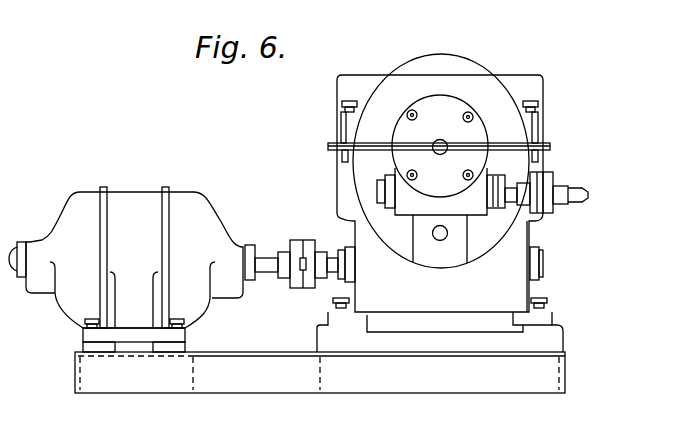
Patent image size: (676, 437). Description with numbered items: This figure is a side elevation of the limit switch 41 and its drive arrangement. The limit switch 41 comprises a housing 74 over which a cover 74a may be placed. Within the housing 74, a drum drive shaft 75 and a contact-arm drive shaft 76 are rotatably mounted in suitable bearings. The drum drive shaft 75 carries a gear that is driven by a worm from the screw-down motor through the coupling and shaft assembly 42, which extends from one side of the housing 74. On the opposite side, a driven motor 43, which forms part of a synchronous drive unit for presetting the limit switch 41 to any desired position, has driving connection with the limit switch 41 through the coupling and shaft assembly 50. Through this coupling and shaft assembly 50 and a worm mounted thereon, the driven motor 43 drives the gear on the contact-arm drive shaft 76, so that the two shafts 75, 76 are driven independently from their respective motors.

The limit switch 41 is at (497, 54).
The coupling and shaft assembly 42 is at (553, 177).
The driven motor 43 is at (208, 183).
The coupling and shaft assembly 50 is at (308, 241).
The housing 74 is at (531, 231).
The cover 74a is at (490, 70).
The drum drive shaft 75 is at (447, 150).
The contact-arm drive shaft 76 is at (440, 241).